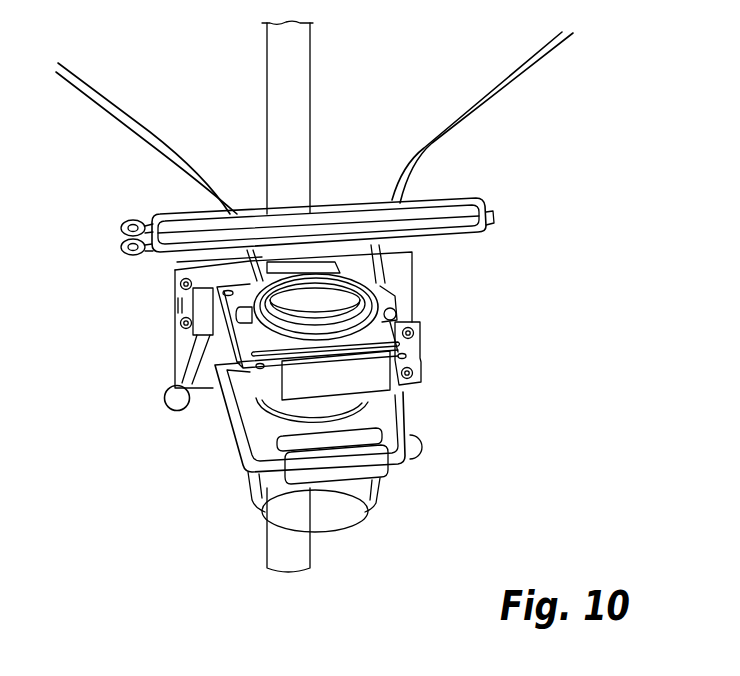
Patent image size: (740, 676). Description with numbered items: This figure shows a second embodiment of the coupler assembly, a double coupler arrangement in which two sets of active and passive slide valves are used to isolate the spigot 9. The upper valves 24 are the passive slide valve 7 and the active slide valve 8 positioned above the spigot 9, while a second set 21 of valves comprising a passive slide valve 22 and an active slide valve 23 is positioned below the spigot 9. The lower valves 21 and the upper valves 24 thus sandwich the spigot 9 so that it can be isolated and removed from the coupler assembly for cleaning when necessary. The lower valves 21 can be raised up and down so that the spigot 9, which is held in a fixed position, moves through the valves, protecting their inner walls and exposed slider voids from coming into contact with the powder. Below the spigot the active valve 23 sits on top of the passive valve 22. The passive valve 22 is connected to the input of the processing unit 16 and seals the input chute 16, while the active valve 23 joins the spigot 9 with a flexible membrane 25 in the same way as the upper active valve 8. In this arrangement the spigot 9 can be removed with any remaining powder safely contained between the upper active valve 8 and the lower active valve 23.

The passive slide valve 7 is at (388, 317).
The active slide valve 8 is at (413, 382).
The spigot 9 is at (360, 402).
The input chute of the processing unit 16 is at (357, 522).
The second set of passive and active slide valves 21 is at (427, 458).
The passive slide valve 22 is at (257, 492).
The active slide valve 23 is at (243, 430).
The upper valves 24 is at (430, 362).
The flexible membrane 25 is at (257, 400).